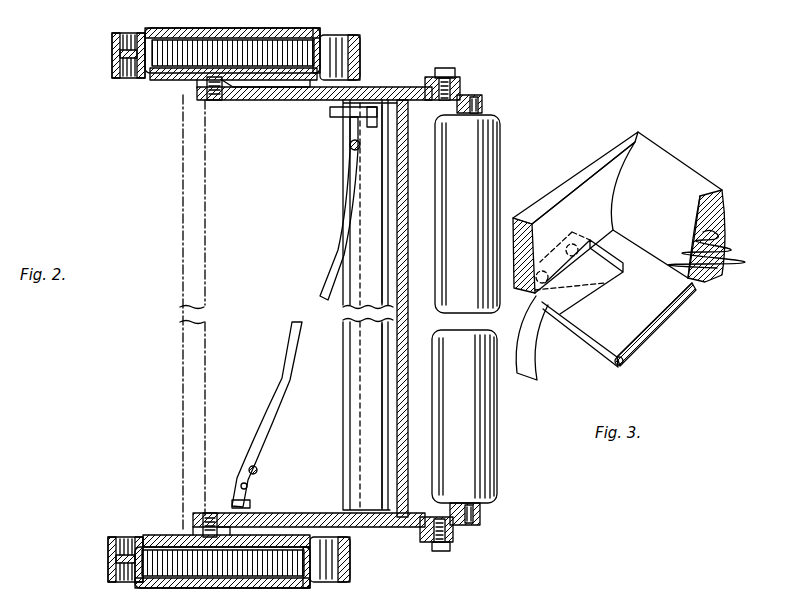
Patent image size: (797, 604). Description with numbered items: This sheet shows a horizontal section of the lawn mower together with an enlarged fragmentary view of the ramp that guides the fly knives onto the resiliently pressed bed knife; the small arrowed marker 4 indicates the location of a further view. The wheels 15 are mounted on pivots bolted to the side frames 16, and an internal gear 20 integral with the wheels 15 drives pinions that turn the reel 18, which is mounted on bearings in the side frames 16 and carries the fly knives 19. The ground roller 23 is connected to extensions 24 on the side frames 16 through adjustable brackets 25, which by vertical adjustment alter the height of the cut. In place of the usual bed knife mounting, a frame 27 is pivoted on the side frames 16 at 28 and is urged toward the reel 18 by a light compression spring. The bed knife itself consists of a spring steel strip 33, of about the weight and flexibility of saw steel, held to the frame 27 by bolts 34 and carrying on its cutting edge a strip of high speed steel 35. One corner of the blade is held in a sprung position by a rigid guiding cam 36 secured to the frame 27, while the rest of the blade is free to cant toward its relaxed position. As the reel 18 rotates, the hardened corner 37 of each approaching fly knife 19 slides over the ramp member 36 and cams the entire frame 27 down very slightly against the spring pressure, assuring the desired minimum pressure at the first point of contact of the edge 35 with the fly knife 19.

In FIG. 2, the section line 4- 4 is at (345, 0).
In FIG. 2, the wheels 15 is at (356, 64).
In FIG. 2, the side frames 16 is at (280, 52).
In FIG. 2, the reel 18 is at (258, 473).
In FIG. 2, the fly knives 19 is at (297, 322).
In FIG. 2, the internal gear 20 is at (150, 33).
In FIG. 2, the ground roller 23 is at (490, 136).
In FIG. 2, the extensions 24 is at (427, 86).
In FIG. 2, the adjustable brackets 25 is at (470, 100).
In FIG. 2, the frame 27 is at (290, 102).
In FIG. 3, the frame 27 is at (595, 160).
In FIG. 2, the pivot 28 is at (215, 103).
In FIG. 2, the spring steel strip 33 is at (368, 378).
In FIG. 3, the spring steel strip 33 is at (658, 321).
In FIG. 2, the bolts 34 is at (415, 0).
In FIG. 3, the bolts 34 is at (706, 276).
In FIG. 2, the strip of high speed steel 35 is at (348, 404).
In FIG. 3, the strip of high speed steel 35 is at (626, 362).
In FIG. 2, the guiding cam 36 is at (337, 110).
In FIG. 3, the guiding cam 36 is at (538, 350).
In FIG. 2, the hardened corner 37 is at (370, 122).